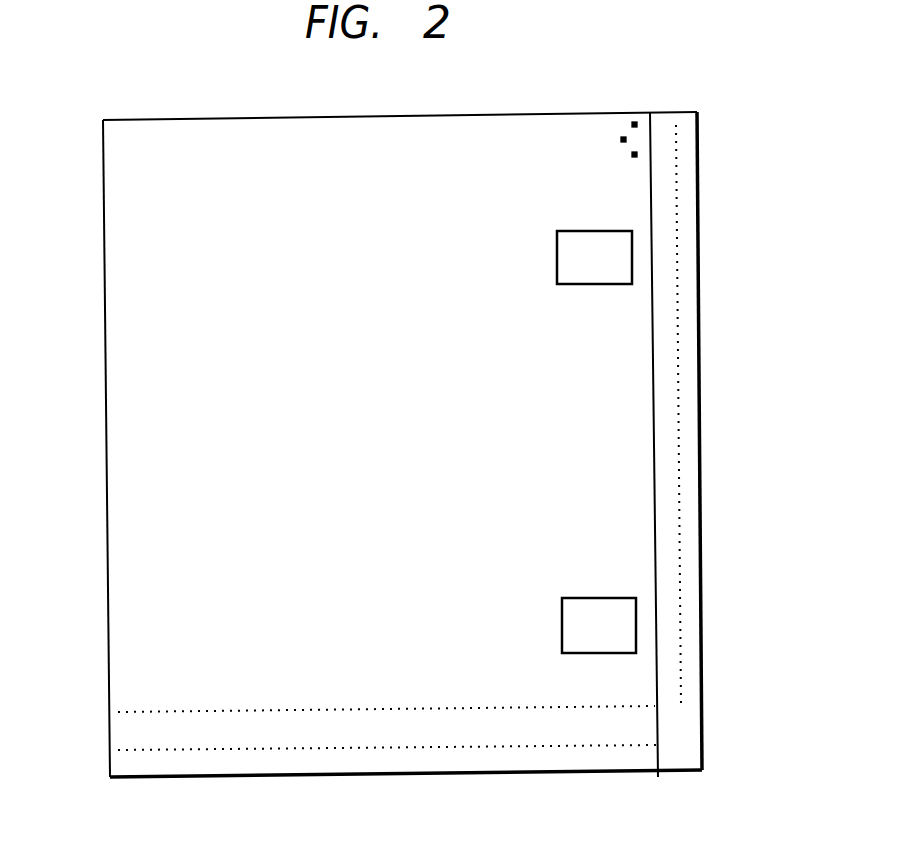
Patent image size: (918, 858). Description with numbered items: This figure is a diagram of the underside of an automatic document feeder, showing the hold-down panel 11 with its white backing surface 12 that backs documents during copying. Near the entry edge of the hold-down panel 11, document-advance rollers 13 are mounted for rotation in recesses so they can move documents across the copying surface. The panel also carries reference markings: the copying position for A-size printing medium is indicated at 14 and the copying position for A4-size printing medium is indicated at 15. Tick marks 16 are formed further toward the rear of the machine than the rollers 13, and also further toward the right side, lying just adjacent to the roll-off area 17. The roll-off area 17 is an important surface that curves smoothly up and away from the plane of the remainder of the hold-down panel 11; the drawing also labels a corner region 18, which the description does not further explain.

The hold-down panel 11 is at (107, 411).
The white backing surface 12 is at (195, 485).
The document-advance rollers 13 is at (632, 247).
The A-size copying position 14 is at (677, 403).
The A4-size copying position 15 is at (655, 479).
The tick marks 16 is at (633, 138).
The roll-off area 17 is at (687, 120).
The corner 18 is at (110, 130).